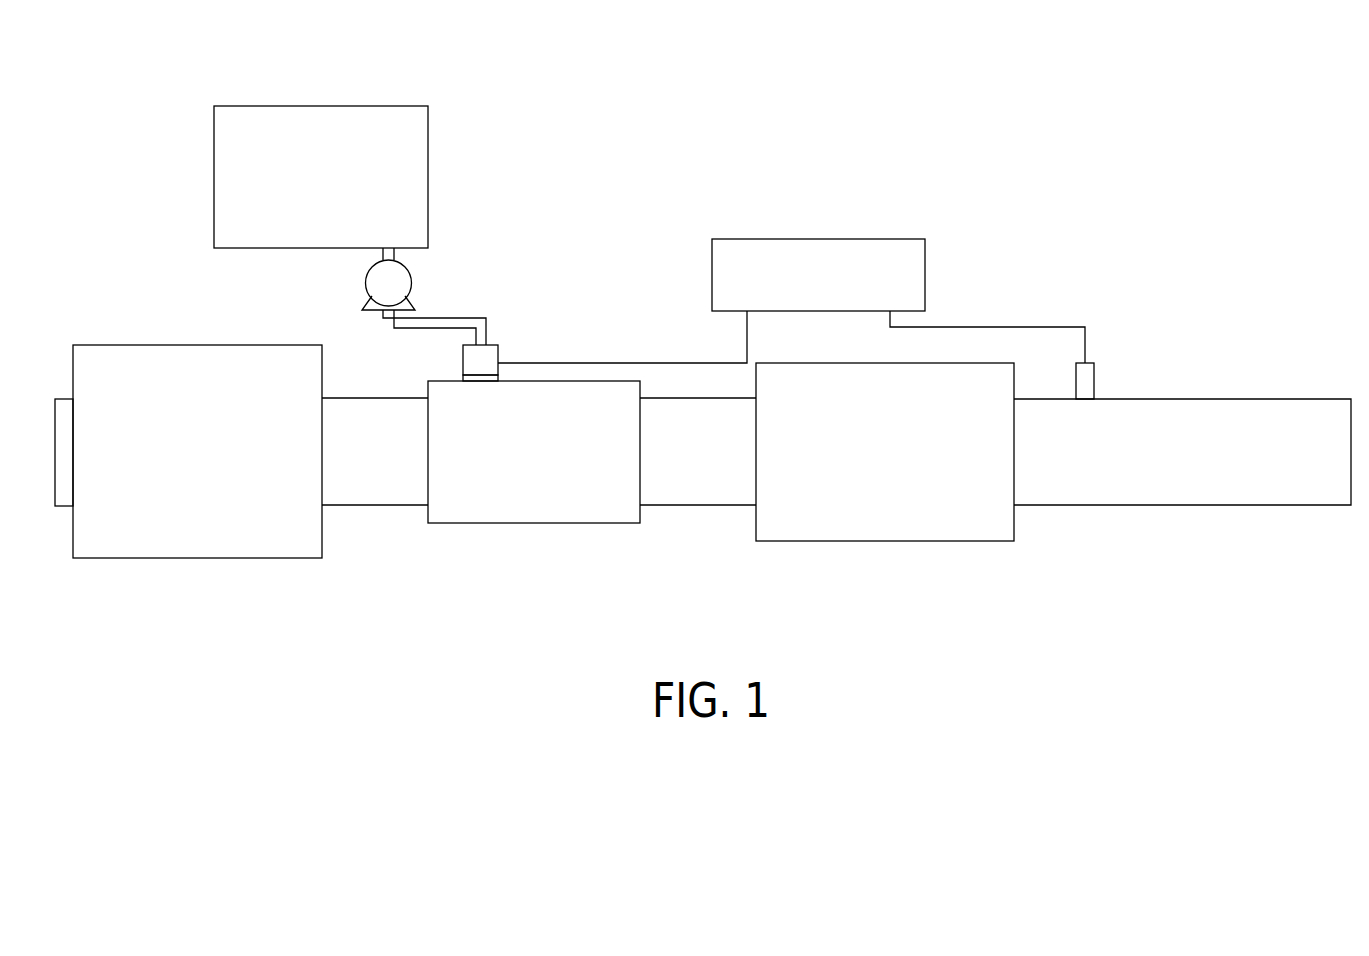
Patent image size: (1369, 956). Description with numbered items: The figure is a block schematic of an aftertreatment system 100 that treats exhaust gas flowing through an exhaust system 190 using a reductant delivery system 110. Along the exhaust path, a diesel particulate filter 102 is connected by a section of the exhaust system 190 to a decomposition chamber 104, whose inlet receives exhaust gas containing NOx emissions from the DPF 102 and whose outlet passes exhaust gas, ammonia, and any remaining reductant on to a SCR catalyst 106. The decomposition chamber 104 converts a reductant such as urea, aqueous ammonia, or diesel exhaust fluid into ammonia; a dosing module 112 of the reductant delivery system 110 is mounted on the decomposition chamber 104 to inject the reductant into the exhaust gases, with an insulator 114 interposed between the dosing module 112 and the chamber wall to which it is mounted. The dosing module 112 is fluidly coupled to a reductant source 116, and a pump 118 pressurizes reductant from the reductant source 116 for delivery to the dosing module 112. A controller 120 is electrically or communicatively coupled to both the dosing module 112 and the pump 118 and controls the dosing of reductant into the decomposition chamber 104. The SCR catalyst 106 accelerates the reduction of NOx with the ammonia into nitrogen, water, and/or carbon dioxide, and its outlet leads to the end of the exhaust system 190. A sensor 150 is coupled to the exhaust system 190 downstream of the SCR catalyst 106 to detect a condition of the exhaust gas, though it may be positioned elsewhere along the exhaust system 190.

The aftertreatment system 100 is at (968, 303).
The diesel particulate filter 102 is at (228, 559).
The decomposition chamber 104 is at (630, 380).
The SCR catalyst 106 is at (893, 542).
The reductant delivery system 110 is at (594, 288).
The dosing module 112 is at (498, 355).
The insulator 114 is at (463, 377).
The reductant source 116 is at (383, 106).
The pump 118 is at (366, 283).
The controller 120 is at (798, 239).
The sensor 150 is at (1113, 376).
The exhaust system 190 is at (416, 600).